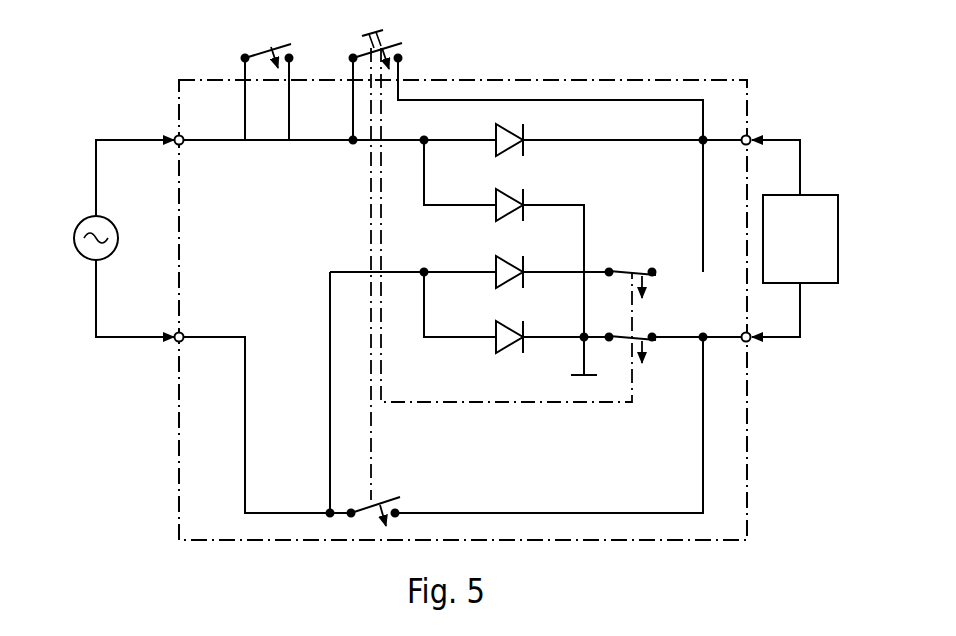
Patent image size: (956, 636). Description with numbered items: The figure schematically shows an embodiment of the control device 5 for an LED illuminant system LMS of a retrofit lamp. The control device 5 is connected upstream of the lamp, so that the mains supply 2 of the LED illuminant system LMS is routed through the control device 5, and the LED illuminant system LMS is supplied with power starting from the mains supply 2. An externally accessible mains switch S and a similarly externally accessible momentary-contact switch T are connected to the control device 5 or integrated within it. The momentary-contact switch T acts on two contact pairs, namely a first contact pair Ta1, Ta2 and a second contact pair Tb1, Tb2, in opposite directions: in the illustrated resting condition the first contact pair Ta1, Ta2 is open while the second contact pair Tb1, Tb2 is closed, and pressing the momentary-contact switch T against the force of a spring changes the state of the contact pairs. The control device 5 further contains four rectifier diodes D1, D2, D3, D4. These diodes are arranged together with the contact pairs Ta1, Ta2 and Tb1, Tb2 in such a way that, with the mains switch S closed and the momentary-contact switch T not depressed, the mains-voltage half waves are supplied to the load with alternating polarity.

The mains supply 2 is at (78, 219).
The control device 5 is at (650, 80).
The mains switch S is at (267, 78).
The momentary-contact switch T is at (491, 254).
The first contact pair contact Ta1 is at (527, 157).
The first contact pair contact Ta2 is at (391, 506).
The second contact pair contact Tb1 is at (646, 292).
The second contact pair contact Tb2 is at (646, 357).
The rectifier diode D1 is at (525, 134).
The rectifier diode D2 is at (469, 266).
The rectifier diode D3 is at (504, 238).
The rectifier diode D4 is at (516, 323).
The LED illuminant system LMS is at (795, 238).